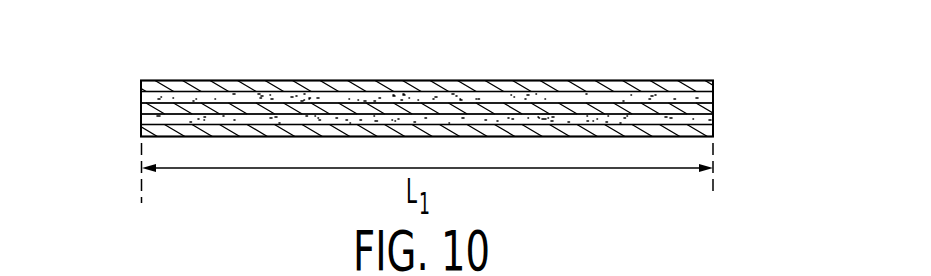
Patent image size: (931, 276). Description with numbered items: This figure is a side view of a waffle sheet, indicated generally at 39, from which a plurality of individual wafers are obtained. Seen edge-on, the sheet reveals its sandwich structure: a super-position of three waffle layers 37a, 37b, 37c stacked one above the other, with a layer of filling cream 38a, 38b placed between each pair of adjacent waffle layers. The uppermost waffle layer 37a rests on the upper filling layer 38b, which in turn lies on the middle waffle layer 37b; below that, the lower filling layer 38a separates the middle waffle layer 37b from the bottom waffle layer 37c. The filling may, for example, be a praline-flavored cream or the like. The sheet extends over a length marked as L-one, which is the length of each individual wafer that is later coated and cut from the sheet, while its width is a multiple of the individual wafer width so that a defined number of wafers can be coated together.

The waffle layer 37a is at (141, 86).
The waffle layer 37b is at (141, 109).
The waffle layer 37c is at (141, 130).
The layer of filling cream 38a is at (713, 117).
The layer of filling cream 38b is at (713, 94).
The laminated material 39 is at (667, 66).